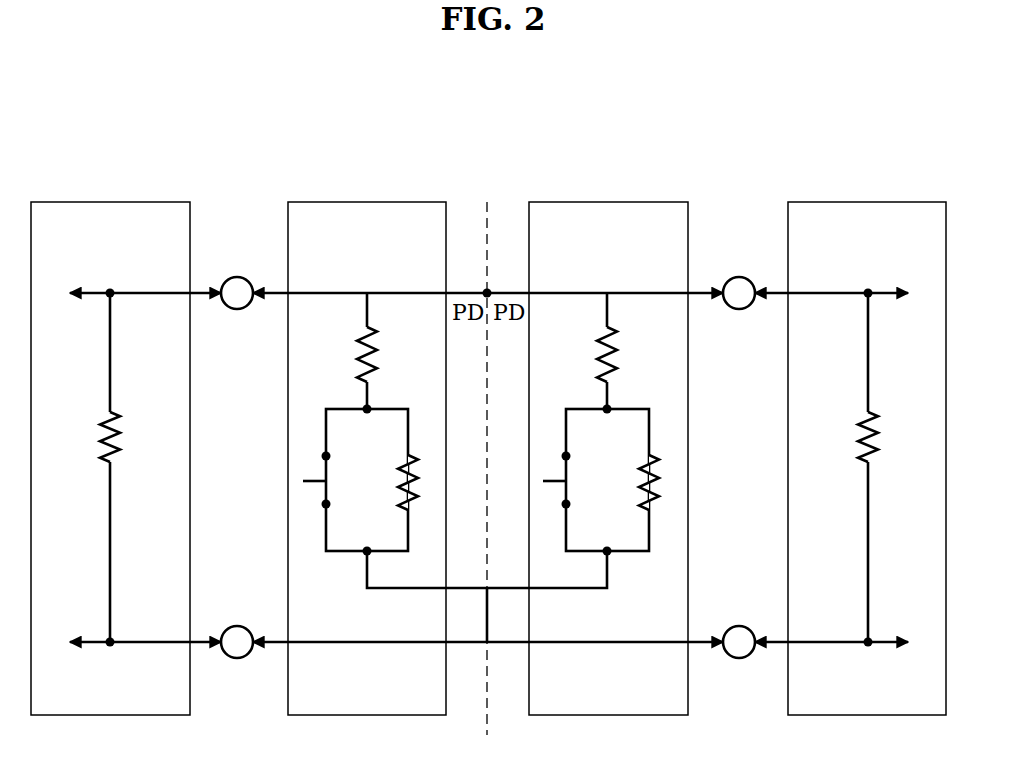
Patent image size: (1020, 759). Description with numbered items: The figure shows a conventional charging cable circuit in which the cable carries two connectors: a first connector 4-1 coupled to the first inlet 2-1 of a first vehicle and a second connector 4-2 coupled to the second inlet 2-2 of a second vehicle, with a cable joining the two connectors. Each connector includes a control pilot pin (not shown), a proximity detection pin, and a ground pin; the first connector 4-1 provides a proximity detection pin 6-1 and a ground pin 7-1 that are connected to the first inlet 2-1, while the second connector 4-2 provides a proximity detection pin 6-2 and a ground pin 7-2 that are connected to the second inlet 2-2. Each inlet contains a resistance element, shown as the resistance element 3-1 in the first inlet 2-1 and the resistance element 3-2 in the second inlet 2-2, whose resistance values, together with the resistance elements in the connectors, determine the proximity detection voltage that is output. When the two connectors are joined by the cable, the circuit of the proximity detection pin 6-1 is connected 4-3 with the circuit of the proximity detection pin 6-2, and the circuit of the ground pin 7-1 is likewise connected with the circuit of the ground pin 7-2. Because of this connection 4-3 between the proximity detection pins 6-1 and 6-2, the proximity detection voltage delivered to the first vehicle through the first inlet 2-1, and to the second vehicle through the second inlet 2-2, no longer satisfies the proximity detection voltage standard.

The first inlet 2-1 is at (161, 202).
The second inlet 2-2 is at (923, 202).
The resistance element 3-1 is at (108, 412).
The resistance element 3-2 is at (866, 412).
The first connector 4-1 is at (423, 202).
The second connector 4-2 is at (663, 202).
The connection 4-3 is at (488, 290).
The proximity detection pin 6-1 is at (238, 277).
The proximity detection pin 6-2 is at (740, 277).
The ground pin 7-1 is at (238, 626).
The ground pin 7-2 is at (740, 626).